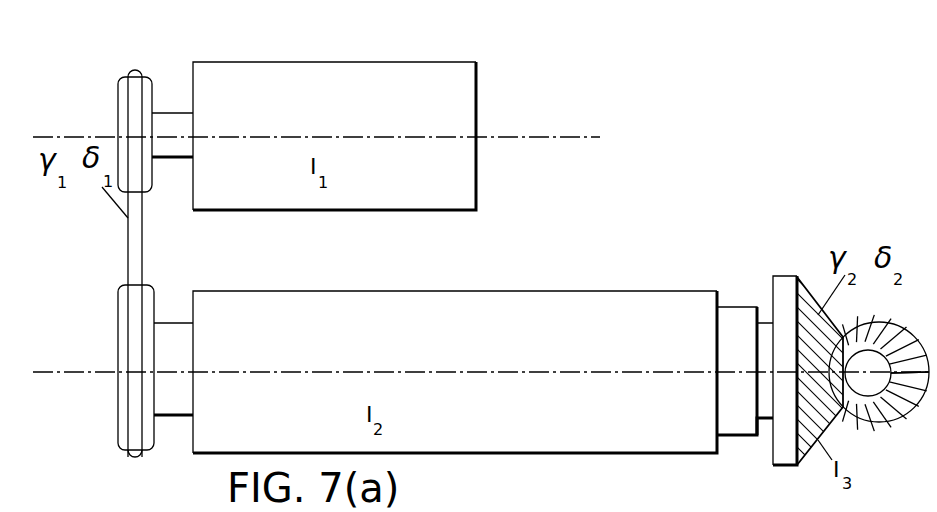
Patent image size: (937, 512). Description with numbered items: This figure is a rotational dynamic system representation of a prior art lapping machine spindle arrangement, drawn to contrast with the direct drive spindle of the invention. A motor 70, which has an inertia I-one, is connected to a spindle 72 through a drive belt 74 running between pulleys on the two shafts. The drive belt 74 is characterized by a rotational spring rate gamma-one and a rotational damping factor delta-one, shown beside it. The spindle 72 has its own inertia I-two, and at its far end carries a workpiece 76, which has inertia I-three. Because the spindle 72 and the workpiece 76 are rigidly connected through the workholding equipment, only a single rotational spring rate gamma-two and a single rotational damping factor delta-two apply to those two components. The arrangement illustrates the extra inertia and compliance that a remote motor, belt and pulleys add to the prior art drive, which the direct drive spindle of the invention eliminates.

The motor 70 is at (477, 79).
The spindle 72 is at (493, 289).
The drive belt 74 is at (128, 260).
The workpiece 76 is at (782, 275).